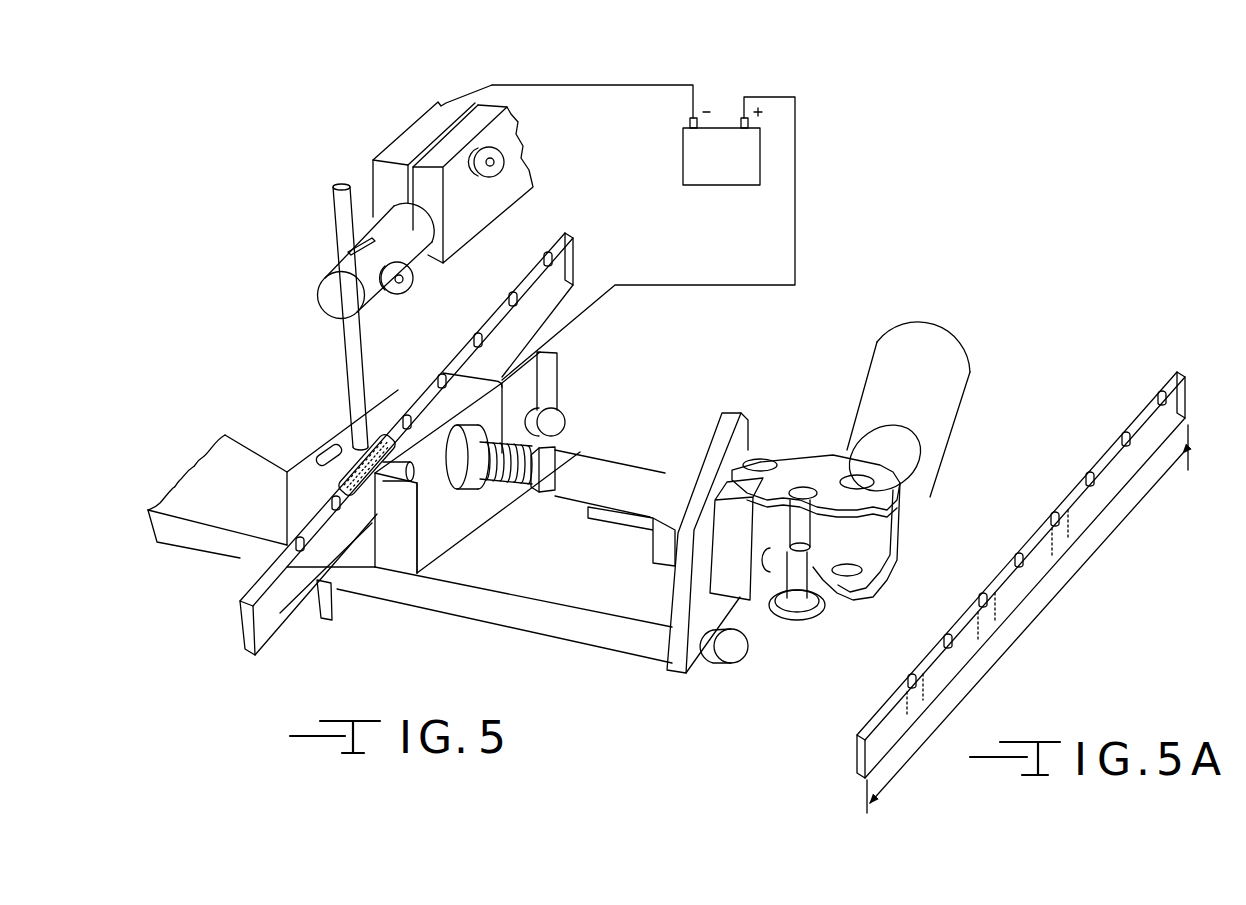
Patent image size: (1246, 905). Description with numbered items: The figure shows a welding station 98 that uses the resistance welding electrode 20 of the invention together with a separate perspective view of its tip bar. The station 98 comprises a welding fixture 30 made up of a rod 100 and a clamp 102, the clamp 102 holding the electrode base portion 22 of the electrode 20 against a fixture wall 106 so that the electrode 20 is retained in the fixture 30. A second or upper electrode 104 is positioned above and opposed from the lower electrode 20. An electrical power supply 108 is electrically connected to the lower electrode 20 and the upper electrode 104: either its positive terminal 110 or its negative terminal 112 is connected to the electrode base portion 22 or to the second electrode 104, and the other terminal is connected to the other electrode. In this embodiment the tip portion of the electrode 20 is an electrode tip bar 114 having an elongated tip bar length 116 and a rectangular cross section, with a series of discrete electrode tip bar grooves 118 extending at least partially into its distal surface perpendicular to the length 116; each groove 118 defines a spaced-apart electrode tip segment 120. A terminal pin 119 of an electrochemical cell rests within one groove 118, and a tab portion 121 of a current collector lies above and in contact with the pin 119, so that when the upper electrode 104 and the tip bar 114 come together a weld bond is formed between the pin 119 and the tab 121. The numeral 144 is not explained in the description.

In FIG. 5, the resistance welding electrode 20 is at (231, 602).
In FIG. 5, the electrode base portion 22 is at (430, 547).
In FIG. 5, the electrode welding fixture 30 is at (523, 612).
In FIG. 5, the welding station 98 is at (268, 236).
In FIG. 5, the rod 100 is at (603, 477).
In FIG. 5, the clamp 102 is at (948, 490).
In FIG. 5, the second or upper electrode 104 is at (350, 366).
In FIG. 5, the fixture wall 106 is at (398, 383).
In FIG. 5, the electrical power supply 108 is at (695, 165).
In FIG. 5, the positive terminal 110 is at (768, 121).
In FIG. 5, the negative terminal 112 is at (682, 117).
In FIG. 5A, the electrode tip bar 114 is at (1143, 390).
In FIG. 5A, the tip bar length 116 is at (1021, 636).
In FIG. 5, the electrode tip bar grooves 118 is at (512, 297).
In FIG. 5A, the electrode tip bar grooves 118 is at (1088, 478).
In FIG. 5, the terminal pin 119 is at (394, 485).
In FIG. 5A, the electrode tip segment 120 is at (922, 713).
In FIG. 5, the tab portion 121 is at (338, 460).
In FIG. 5, the strip end 144 is at (560, 270).